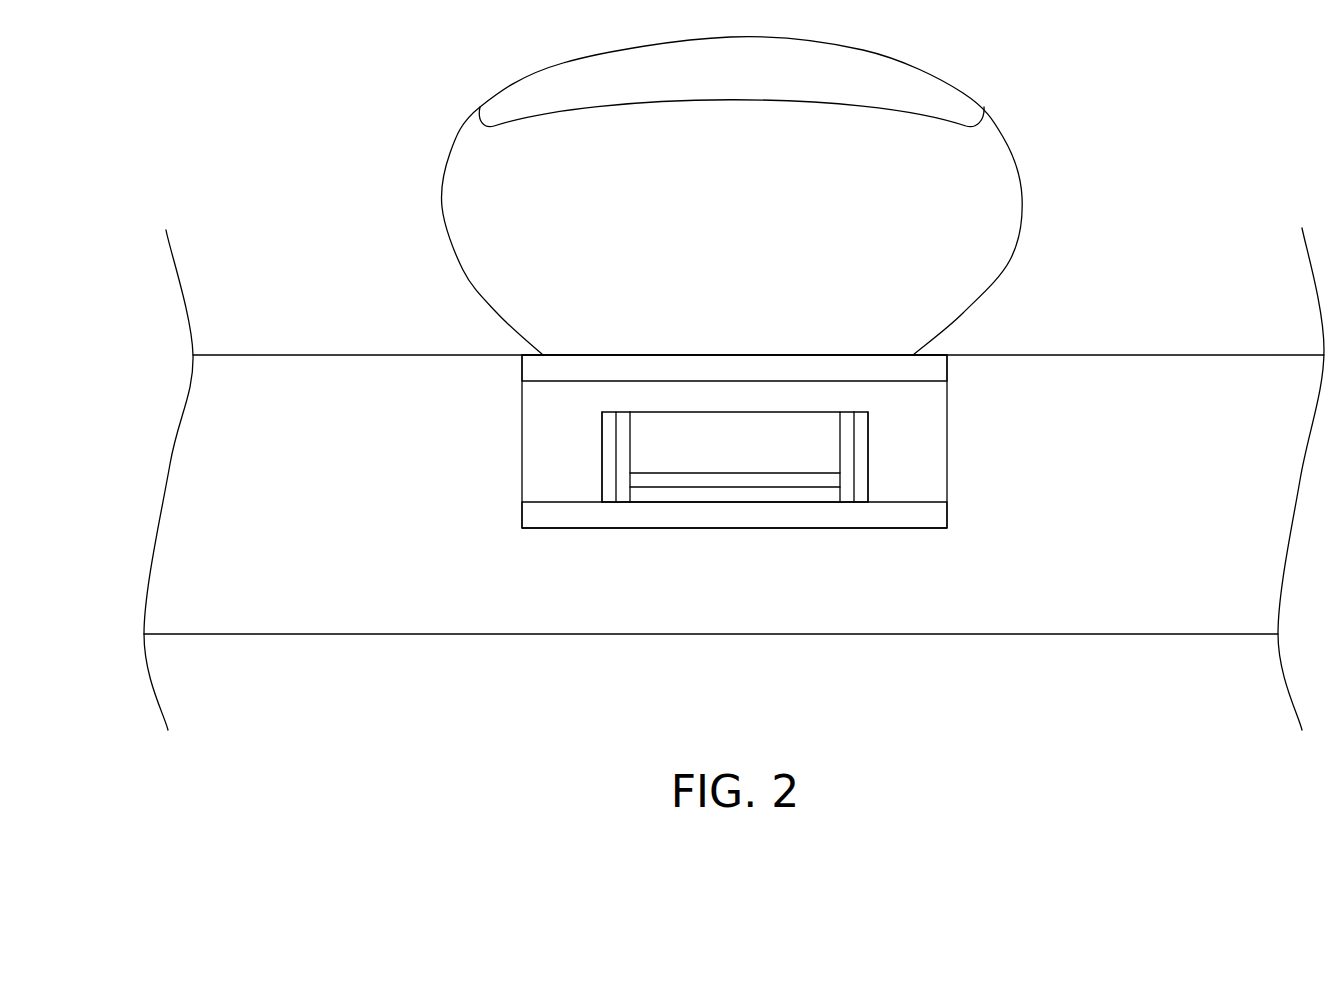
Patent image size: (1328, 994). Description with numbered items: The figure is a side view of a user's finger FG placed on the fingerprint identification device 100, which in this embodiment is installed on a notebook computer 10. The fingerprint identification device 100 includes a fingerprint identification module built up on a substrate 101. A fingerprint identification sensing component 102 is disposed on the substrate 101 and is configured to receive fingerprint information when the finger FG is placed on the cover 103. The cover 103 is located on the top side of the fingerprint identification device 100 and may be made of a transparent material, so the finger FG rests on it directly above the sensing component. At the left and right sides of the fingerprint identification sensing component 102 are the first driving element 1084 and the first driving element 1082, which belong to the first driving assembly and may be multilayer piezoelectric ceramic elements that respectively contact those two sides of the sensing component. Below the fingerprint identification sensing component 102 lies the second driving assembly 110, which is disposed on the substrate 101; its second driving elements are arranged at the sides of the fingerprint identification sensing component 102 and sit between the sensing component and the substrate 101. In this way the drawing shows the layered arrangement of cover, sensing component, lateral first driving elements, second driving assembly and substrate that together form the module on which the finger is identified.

The user's finger FG is at (908, 228).
The notebook computer 10 is at (319, 397).
The fingerprint identification device 100 is at (930, 540).
The substrate 101 is at (772, 513).
The fingerprint identification sensing component 102 is at (783, 442).
The cover 103 is at (661, 368).
The first driving element 1082 is at (858, 465).
The first driving element 1084 is at (608, 465).
The second driving assembly 110 is at (690, 493).